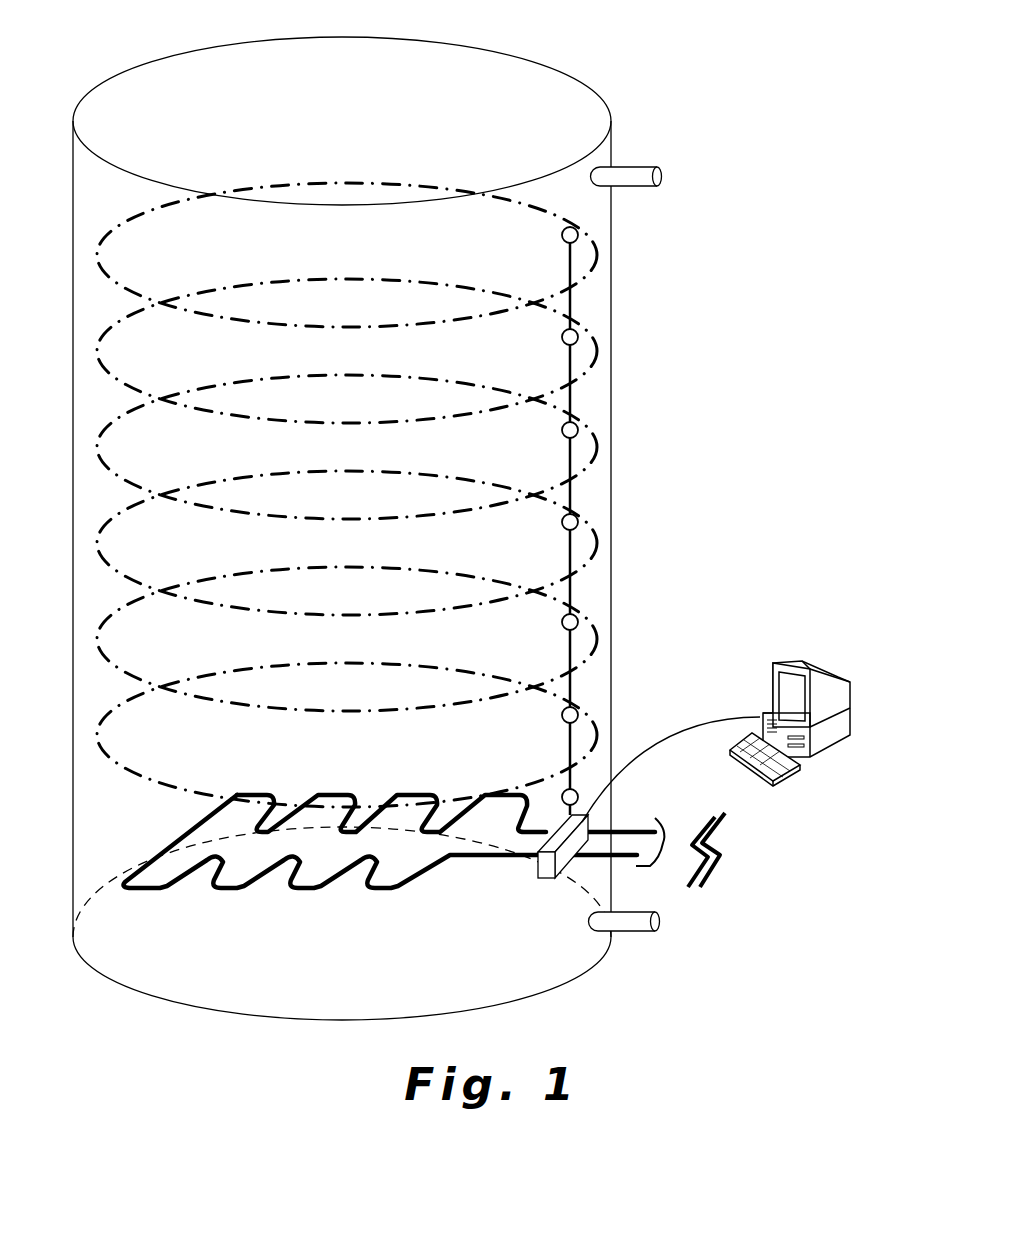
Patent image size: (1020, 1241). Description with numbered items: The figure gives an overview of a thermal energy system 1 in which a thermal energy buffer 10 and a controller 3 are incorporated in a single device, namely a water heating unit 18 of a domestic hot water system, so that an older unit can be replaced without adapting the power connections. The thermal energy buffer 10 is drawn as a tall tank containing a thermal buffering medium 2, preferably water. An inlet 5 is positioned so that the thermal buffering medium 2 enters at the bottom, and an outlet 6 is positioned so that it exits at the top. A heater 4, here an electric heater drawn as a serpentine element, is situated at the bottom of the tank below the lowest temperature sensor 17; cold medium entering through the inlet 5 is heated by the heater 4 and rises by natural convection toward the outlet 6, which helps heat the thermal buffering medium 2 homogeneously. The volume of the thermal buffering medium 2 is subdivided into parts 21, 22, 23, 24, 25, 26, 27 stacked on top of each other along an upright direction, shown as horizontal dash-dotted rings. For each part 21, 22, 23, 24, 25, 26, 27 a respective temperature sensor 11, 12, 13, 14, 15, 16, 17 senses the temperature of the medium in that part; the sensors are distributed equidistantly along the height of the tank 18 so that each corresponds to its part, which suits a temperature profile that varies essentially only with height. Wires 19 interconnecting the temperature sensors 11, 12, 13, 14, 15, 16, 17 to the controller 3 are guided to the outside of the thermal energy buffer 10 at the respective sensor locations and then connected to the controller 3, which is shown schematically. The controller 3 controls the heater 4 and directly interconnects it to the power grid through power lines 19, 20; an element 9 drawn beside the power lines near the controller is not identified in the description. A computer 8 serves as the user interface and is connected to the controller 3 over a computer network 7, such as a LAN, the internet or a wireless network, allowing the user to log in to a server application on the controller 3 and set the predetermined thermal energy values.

The thermal energy system 1 is at (530, 87).
The thermal buffering medium 2 is at (425, 495).
The controller 3 is at (592, 864).
The heater 4 is at (389, 935).
The inlet 5 is at (642, 920).
The outlet 6 is at (635, 177).
The computer network 7 is at (720, 713).
The computer 8 is at (795, 670).
The power supply 9 is at (670, 857).
The thermal energy buffer 10 is at (662, 505).
The temperature sensor 11 is at (580, 238).
The temperature sensor 12 is at (580, 340).
The temperature sensor 13 is at (580, 433).
The temperature sensor 14 is at (580, 525).
The temperature sensor 15 is at (580, 625).
The temperature sensor 16 is at (580, 715).
The lowest temperature sensor 17 is at (580, 797).
The water heating unit 18 is at (672, 88).
The wires 19 is at (572, 589).
The power lines 20 is at (571, 821).
The part 21 is at (336, 313).
The part 22 is at (336, 416).
The part 23 is at (336, 511).
The part 24 is at (336, 608).
The part 25 is at (336, 706).
The part 26 is at (336, 788).
The part 27 is at (336, 861).